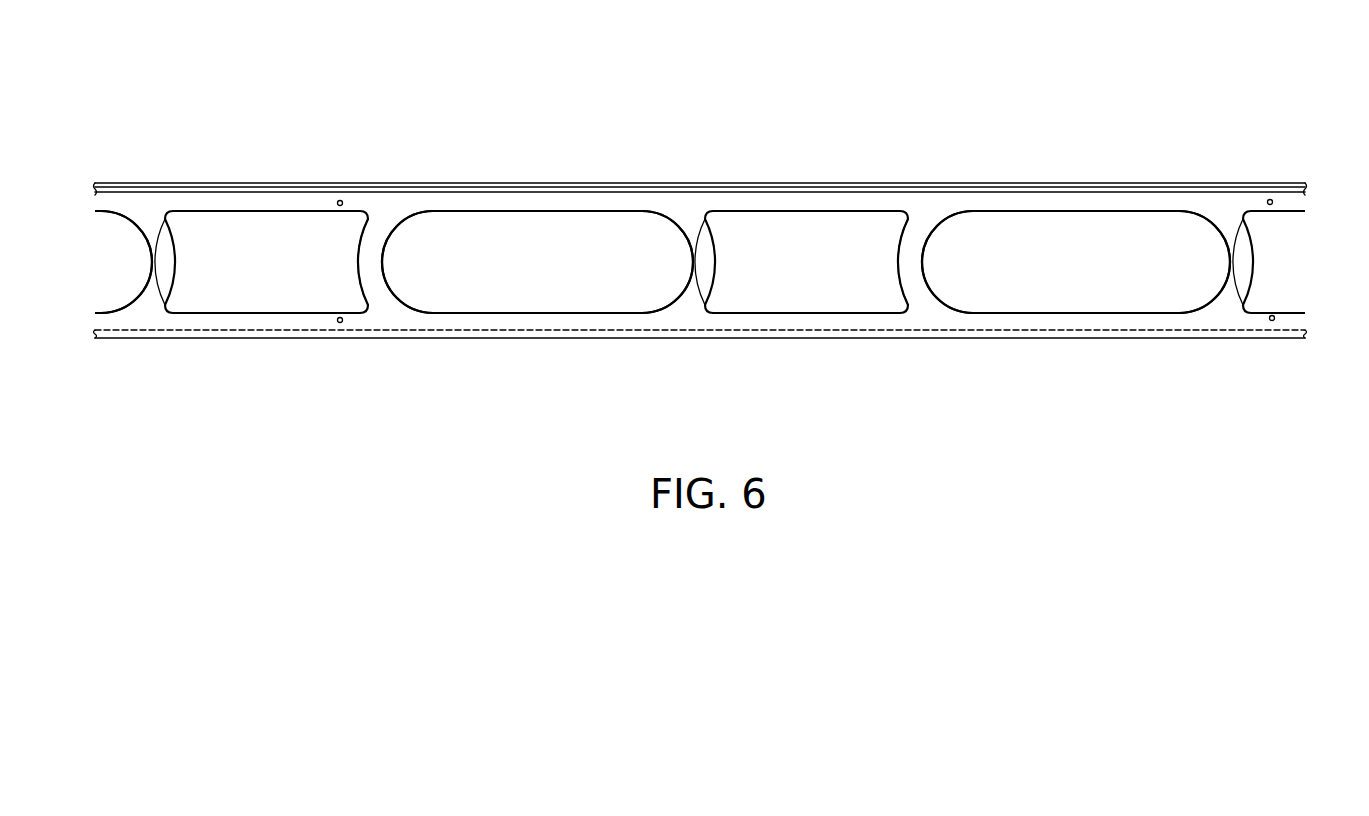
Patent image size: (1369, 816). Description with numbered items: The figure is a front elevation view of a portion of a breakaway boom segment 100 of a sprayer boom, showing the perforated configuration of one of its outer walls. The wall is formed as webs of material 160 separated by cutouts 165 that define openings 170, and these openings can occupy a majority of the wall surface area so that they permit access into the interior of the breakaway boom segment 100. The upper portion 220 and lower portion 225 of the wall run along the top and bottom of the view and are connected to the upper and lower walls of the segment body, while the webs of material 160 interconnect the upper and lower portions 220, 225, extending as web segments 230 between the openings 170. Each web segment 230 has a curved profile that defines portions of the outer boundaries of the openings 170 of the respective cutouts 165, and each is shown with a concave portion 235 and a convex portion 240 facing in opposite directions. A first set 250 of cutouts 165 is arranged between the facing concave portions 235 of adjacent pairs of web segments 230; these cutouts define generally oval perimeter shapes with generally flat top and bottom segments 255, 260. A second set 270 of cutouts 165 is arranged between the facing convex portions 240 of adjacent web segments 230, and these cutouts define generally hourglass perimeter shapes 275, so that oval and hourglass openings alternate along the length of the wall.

The breakaway boom segment 100 is at (1141, 57).
The webs of material 160 is at (148, 303).
The cutouts 165 is at (757, 207).
The openings 170 is at (827, 233).
The upper portion 220 is at (540, 204).
The lower portion 225 is at (539, 330).
The web segments 230 is at (152, 288).
The concave portion 235 is at (152, 262).
The convex portion 240 is at (353, 260).
The first set of cutouts 250 is at (1037, 320).
The top segment 255 is at (517, 210).
The bottom segment 260 is at (522, 310).
The second set of cutouts 270 is at (840, 321).
The hourglass perimeter shapes 275 is at (292, 318).